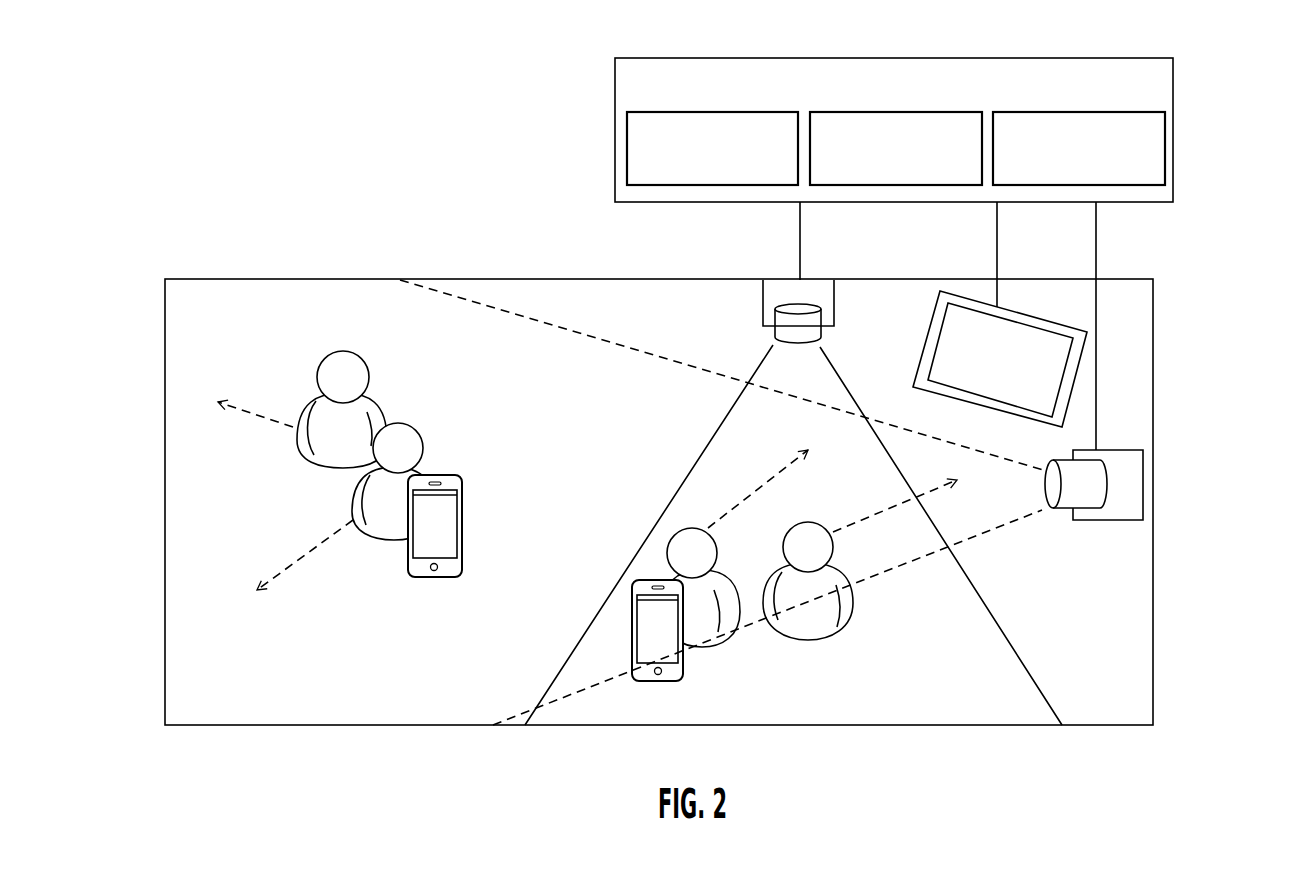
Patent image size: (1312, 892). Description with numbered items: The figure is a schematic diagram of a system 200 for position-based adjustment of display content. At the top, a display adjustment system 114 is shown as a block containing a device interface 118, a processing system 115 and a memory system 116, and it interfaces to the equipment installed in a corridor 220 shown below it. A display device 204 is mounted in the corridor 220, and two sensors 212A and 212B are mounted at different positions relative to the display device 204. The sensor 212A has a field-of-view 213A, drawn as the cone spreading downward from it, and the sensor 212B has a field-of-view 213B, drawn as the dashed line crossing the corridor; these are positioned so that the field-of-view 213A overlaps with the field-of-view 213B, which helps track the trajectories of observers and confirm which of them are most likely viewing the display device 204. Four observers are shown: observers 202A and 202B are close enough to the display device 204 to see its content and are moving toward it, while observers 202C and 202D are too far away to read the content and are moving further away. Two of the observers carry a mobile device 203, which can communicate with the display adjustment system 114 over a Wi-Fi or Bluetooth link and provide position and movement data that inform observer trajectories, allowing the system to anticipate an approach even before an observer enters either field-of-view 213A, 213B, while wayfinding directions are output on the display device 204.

The display adjustment system 114 is at (1173, 92).
The processing system 115 is at (847, 185).
The memory system 116 is at (1165, 165).
The device interface 118 is at (660, 185).
The system 200 is at (437, 176).
The observer 202A is at (720, 650).
The observer 202B is at (847, 637).
The observer 202C is at (373, 397).
The observer 202D is at (420, 470).
The mobile device 203 is at (423, 578).
The display device 204 is at (924, 340).
The sensor 212A is at (763, 293).
The sensor 212B is at (1143, 510).
The field-of-view 213A is at (686, 483).
The field-of-view 213B is at (672, 360).
The corridor 220 is at (1153, 704).